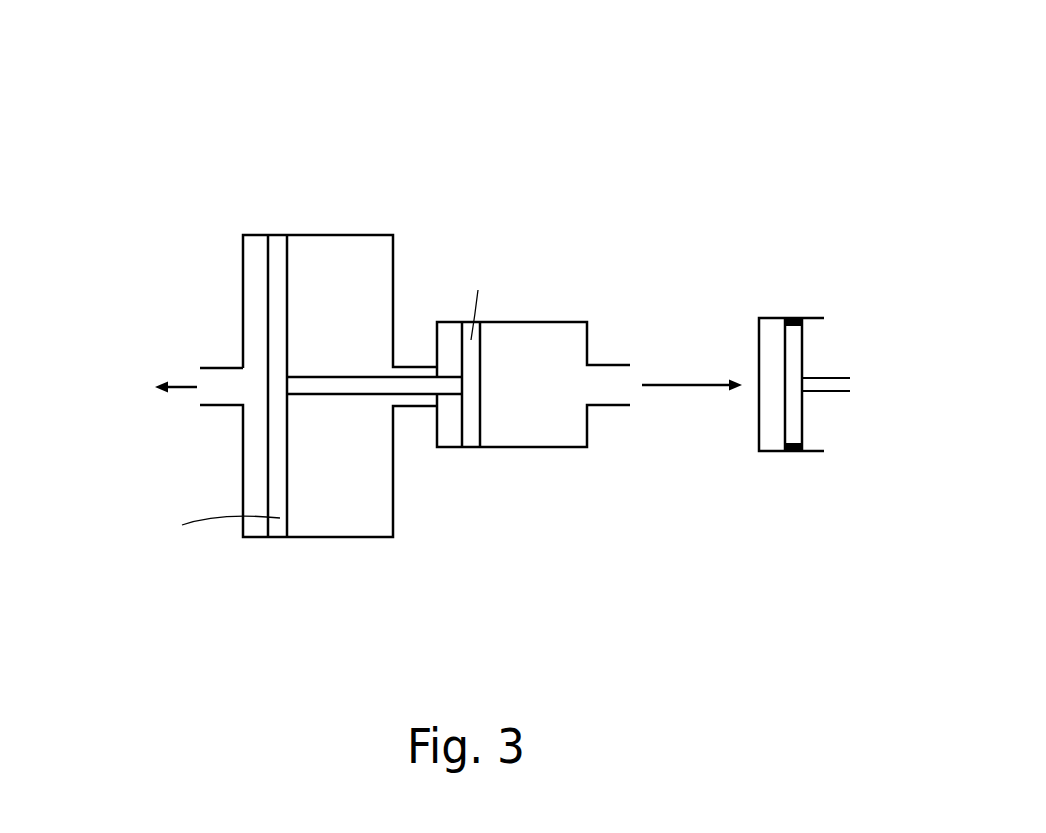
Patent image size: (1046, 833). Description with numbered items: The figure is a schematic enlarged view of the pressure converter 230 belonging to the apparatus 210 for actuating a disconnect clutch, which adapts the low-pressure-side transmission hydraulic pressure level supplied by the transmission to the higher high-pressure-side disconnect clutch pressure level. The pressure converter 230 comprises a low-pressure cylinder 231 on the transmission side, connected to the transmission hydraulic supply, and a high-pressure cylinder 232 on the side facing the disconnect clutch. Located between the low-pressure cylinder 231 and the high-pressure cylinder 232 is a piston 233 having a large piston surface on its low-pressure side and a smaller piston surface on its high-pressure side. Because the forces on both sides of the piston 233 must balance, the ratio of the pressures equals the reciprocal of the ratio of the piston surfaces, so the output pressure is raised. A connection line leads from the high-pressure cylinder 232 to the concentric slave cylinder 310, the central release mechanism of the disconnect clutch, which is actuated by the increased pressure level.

The apparatus for actuating a disconnect clutch 210 is at (600, 99).
The pressure converter 230 is at (426, 163).
The low-pressure cylinder 231 is at (330, 232).
The high-pressure cylinder 232 is at (532, 320).
The piston 233 is at (351, 382).
The concentric slave cylinder 310 is at (799, 473).